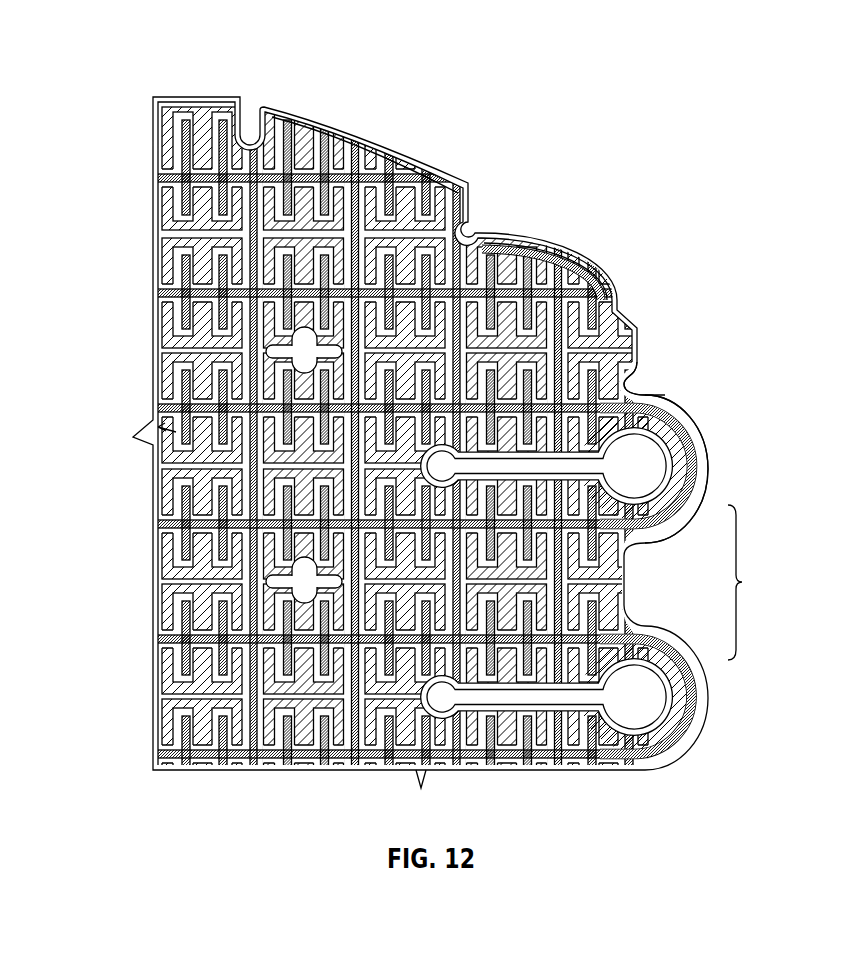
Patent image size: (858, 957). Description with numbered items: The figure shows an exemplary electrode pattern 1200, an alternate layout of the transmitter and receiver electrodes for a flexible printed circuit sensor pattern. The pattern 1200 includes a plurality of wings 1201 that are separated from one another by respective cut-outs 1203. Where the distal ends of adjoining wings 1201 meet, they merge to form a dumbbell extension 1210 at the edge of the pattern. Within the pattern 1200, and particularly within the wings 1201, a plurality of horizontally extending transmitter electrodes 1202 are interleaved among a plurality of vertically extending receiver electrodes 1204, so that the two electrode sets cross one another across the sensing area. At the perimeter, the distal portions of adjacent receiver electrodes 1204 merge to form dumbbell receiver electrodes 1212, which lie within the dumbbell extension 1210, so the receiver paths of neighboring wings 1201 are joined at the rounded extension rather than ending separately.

The electrode pattern 1200 is at (751, 91).
The wings 1201 is at (765, 582).
The transmitter electrodes 1202 is at (655, 408).
The cut-outs 1203 is at (595, 698).
The receiver electrodes 1204 is at (608, 303).
The dumbbell extension 1210 is at (686, 397).
The dumbbell receiver electrodes 1212 is at (708, 470).